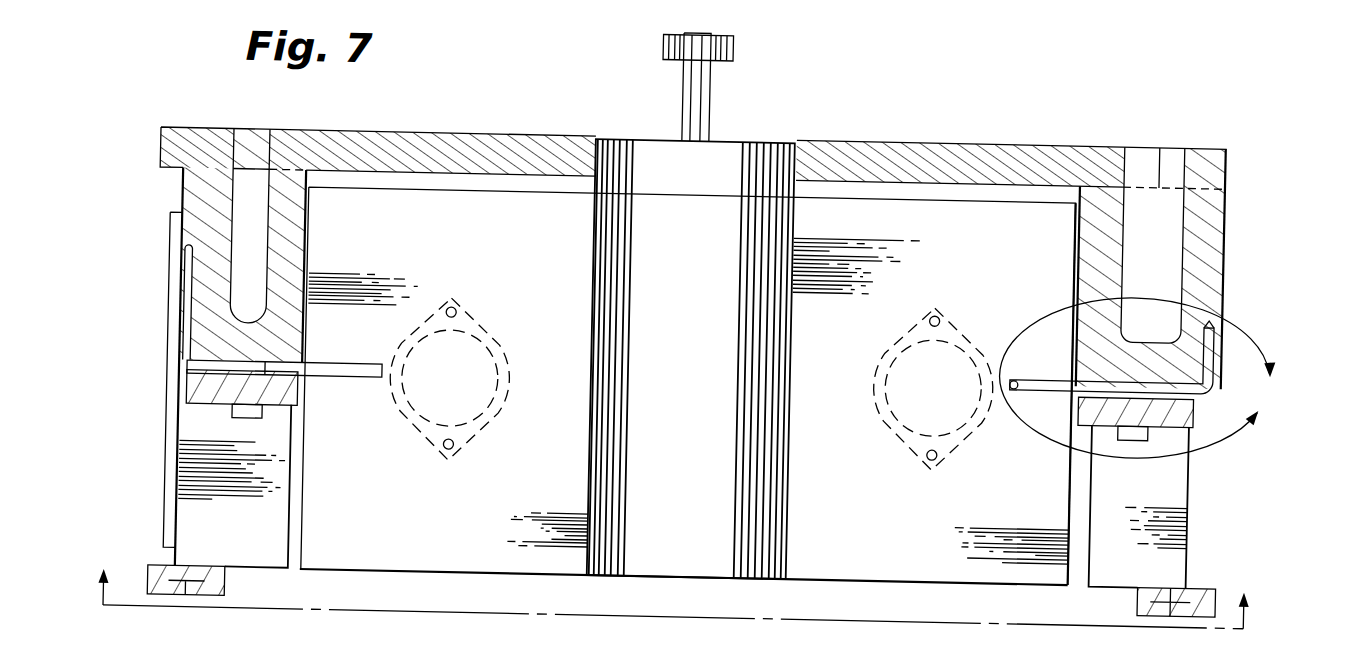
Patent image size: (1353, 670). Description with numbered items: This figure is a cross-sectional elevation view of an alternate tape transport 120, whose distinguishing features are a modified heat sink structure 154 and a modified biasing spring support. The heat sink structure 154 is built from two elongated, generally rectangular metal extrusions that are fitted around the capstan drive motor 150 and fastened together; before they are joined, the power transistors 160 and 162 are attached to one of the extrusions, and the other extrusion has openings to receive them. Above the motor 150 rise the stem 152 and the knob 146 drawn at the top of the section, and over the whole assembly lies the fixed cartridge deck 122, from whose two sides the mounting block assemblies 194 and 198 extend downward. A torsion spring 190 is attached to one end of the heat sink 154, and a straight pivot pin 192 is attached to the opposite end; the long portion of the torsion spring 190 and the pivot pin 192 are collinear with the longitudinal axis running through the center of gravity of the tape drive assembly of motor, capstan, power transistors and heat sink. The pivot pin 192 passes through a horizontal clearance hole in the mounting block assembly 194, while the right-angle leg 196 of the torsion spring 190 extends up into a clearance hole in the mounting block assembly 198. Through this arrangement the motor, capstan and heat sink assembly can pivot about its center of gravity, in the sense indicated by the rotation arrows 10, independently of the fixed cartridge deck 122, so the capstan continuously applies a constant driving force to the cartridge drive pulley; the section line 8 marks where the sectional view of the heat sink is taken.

The tape transport 120 is at (931, 62).
The cartridge deck 122 is at (1059, 93).
The knob 146 is at (662, 36).
The stem 152 is at (709, 82).
The capstan drive motor 150 is at (796, 287).
The heat sink structure 154 is at (474, 542).
The power transistor 160 is at (496, 414).
The power transistor 162 is at (969, 417).
The torsion spring 190 is at (1065, 350).
The pivot pin 192 is at (350, 359).
The mounting block assembly 194 is at (310, 225).
The right-angle leg 196 is at (1220, 336).
The mounting block assembly 198 is at (1227, 207).
The rotation direction 10 is at (1137, 378).
The section line 8- 8 is at (669, 584).